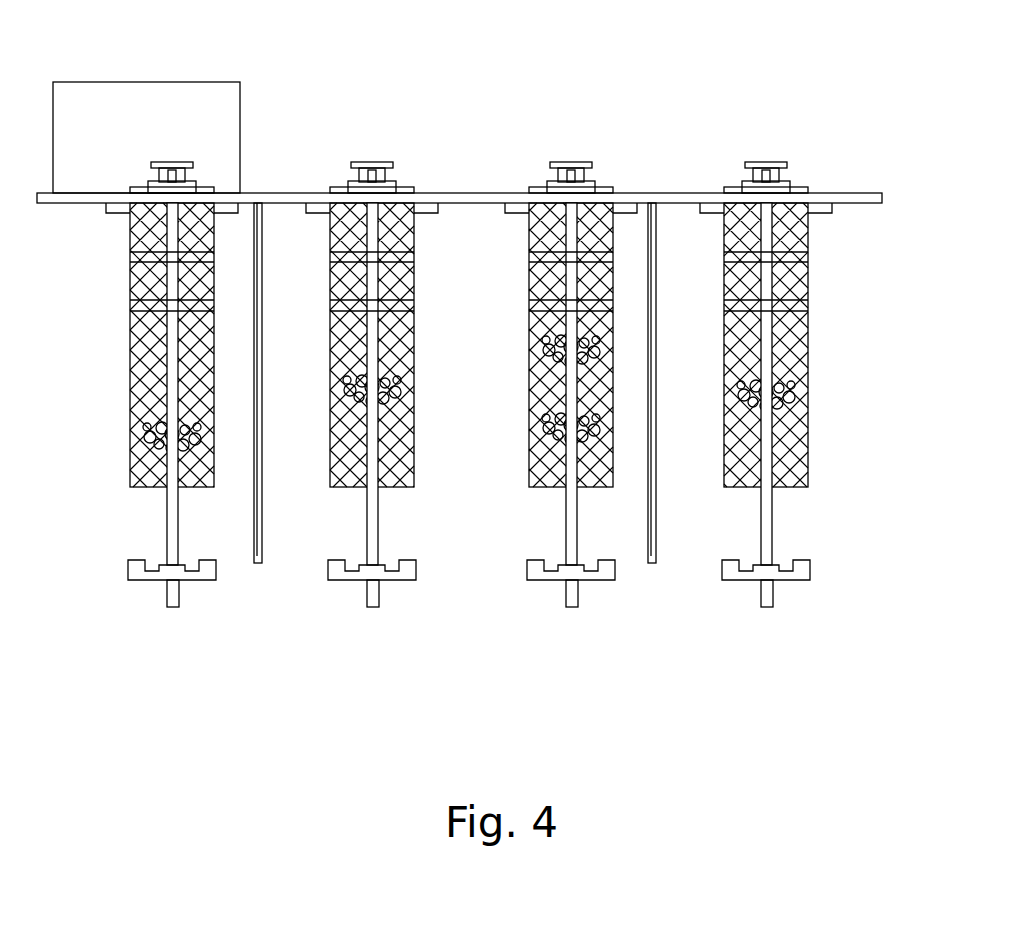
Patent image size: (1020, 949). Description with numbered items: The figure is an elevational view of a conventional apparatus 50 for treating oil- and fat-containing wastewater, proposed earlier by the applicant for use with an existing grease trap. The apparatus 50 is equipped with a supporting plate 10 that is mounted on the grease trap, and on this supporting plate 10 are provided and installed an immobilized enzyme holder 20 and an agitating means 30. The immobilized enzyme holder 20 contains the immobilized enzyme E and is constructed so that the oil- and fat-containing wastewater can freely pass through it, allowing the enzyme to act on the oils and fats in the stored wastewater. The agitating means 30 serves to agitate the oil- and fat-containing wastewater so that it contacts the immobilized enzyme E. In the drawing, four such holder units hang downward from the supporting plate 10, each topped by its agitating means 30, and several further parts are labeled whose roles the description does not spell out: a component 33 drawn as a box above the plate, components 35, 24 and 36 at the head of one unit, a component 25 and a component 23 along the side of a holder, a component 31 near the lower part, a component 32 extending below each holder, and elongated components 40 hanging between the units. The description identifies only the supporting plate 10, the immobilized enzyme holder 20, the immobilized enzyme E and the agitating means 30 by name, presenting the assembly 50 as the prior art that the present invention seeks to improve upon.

The supporting plate 10 is at (469, 203).
The immobilized enzyme holder 20 is at (130, 462).
The partition 23 is at (808, 257).
The cap base 24 is at (784, 190).
The flange 25 is at (815, 209).
The agitating means 30 is at (184, 164).
The stopper 31 is at (808, 300).
The shaft 32 is at (170, 527).
The cover 33 is at (140, 100).
The stem 35 is at (752, 182).
The cap outer base 36 is at (808, 190).
The pin 40 is at (258, 565).
The apparatus for treating oil- and fat-containing wastewater 50 is at (533, 70).
The immobilized enzyme E is at (138, 438).